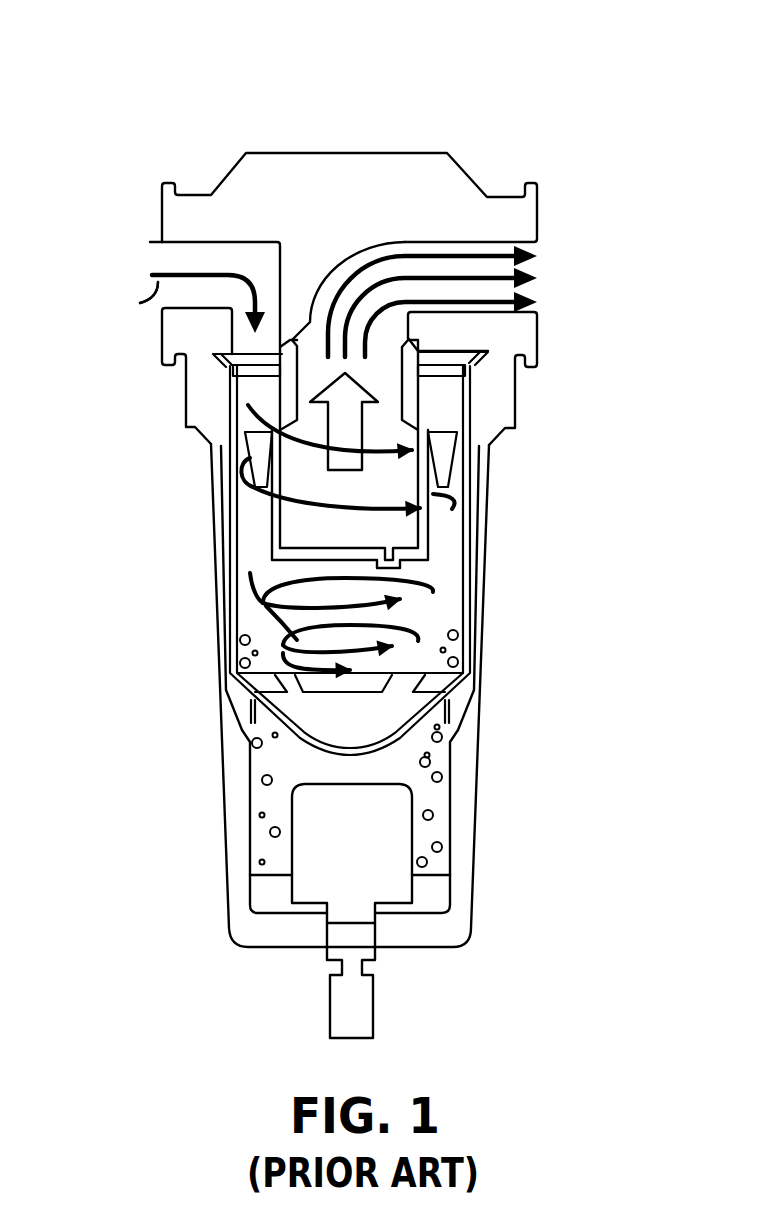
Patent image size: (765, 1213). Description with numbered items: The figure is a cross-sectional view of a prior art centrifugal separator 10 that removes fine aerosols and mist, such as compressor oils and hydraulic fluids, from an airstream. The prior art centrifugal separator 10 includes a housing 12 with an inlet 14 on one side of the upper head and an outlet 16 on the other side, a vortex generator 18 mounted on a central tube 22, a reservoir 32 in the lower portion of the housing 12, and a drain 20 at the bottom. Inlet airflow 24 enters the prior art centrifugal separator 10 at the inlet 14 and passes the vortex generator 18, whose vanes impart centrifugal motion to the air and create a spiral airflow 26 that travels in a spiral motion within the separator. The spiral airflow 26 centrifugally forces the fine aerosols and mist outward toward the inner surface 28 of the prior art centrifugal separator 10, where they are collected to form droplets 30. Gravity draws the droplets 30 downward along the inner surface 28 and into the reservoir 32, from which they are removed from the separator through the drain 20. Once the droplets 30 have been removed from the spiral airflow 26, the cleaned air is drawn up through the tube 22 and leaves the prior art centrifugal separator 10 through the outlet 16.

The prior art centrifugal separator 10 is at (244, 114).
The housing 12 is at (490, 580).
The inlet 14 is at (142, 247).
The outlet 16 is at (568, 266).
The vortex generator 18 is at (242, 452).
The drain 20 is at (412, 830).
The tube 22 is at (448, 532).
The inlet airflow 24 is at (163, 284).
The spiral airflow 26 is at (245, 584).
The inner surface 28 is at (248, 612).
The droplets 30 is at (261, 779).
The reservoir 32 is at (198, 912).